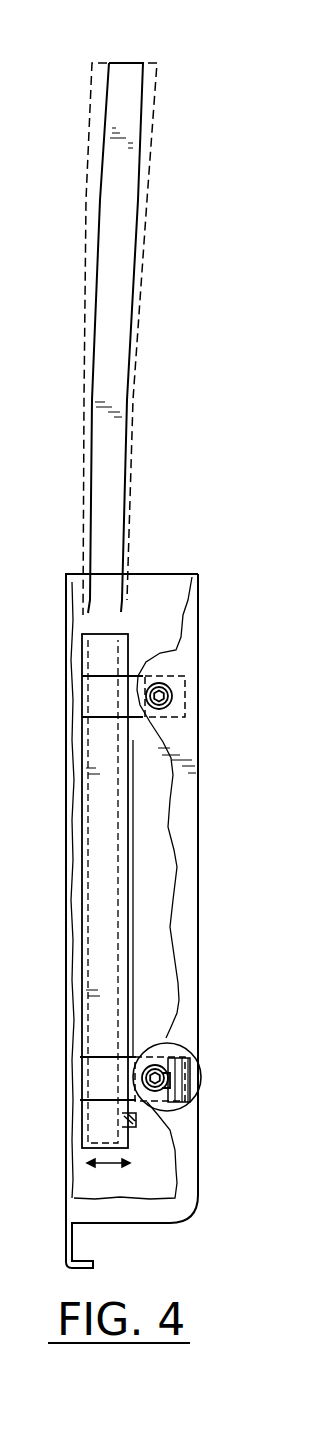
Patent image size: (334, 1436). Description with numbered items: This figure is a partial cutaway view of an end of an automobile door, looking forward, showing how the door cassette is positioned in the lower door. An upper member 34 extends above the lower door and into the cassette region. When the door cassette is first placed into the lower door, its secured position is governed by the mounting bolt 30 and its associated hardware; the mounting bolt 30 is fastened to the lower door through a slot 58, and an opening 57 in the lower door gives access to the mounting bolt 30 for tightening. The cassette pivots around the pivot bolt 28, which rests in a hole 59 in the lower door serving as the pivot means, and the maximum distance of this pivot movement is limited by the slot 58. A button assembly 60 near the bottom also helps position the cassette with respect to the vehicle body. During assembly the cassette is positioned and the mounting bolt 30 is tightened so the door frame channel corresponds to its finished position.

The mounting bar 34 is at (123, 68).
The pivot bolt 28 is at (170, 684).
The hole 59 is at (188, 709).
The opening 57 is at (157, 1075).
The mounting bolt 30 is at (170, 1070).
The slot 58 is at (168, 1092).
The button assembly 60 is at (135, 1133).